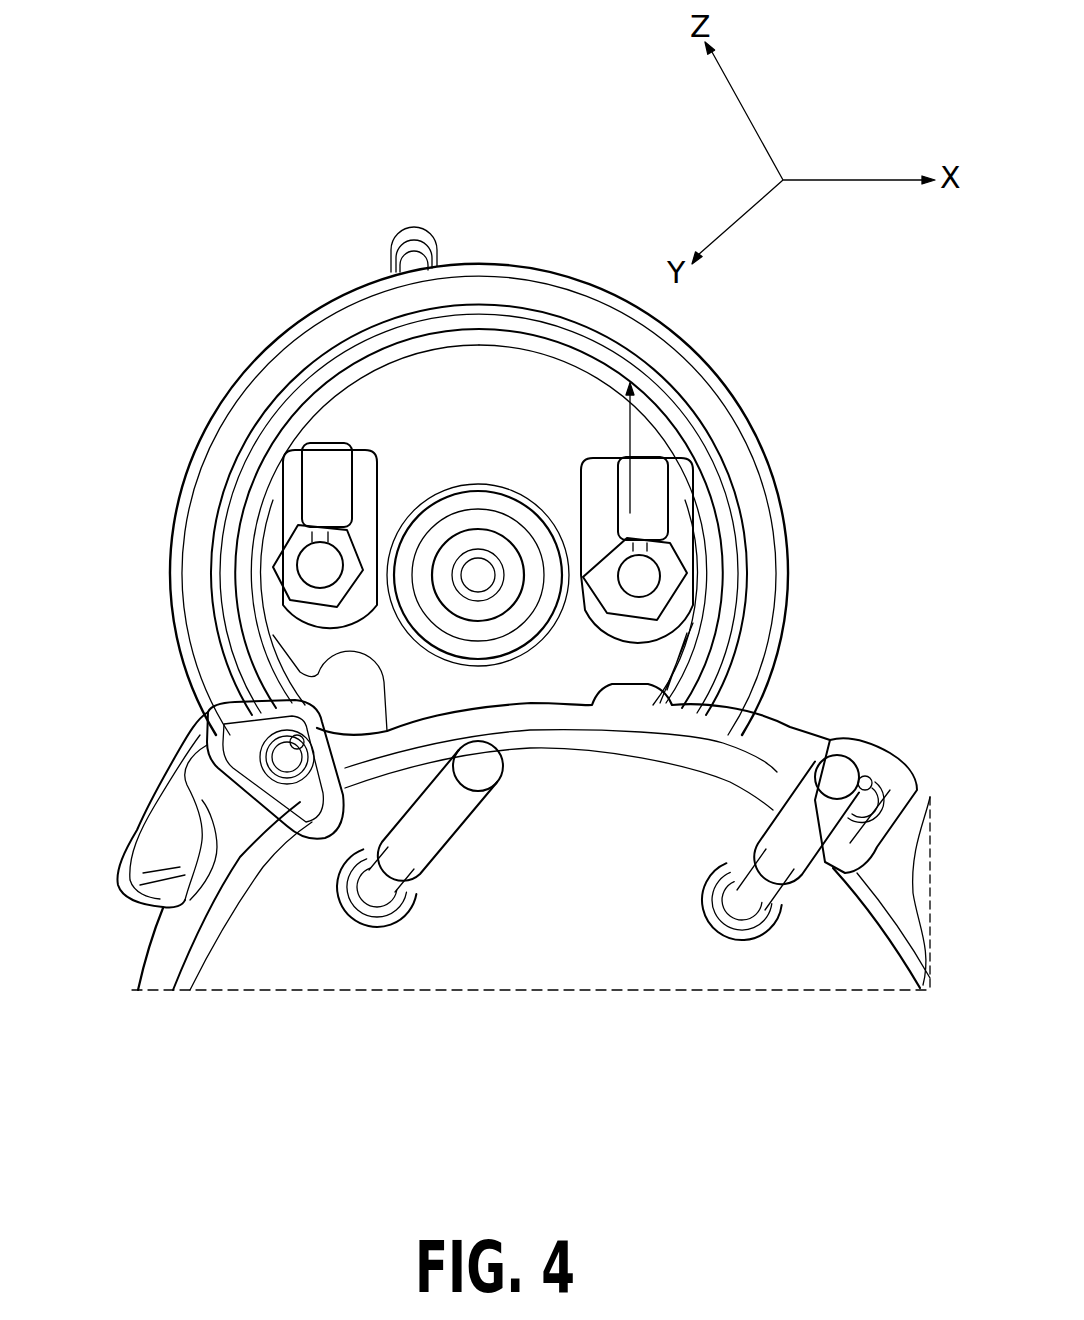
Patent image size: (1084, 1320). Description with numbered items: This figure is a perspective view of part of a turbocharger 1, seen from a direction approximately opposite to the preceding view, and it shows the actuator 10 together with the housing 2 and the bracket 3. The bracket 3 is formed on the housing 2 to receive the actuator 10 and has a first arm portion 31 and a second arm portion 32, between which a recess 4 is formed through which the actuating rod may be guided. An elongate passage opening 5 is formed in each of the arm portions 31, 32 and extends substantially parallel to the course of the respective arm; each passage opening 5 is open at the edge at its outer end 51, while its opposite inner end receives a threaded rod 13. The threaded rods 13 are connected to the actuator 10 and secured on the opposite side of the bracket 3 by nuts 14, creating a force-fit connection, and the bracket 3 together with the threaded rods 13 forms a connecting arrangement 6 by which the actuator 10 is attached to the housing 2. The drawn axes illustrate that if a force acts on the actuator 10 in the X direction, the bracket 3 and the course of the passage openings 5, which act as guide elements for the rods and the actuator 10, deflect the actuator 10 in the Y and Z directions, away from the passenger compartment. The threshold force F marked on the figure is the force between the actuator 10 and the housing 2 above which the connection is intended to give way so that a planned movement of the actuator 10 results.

The turbocharger 1 is at (330, 213).
The housing 2 is at (235, 952).
The bracket 3 is at (705, 650).
The recess 4 is at (473, 452).
The passage opening 5 is at (312, 473).
The connecting arrangement 6 is at (197, 583).
The actuator 10 is at (382, 404).
The threaded rod 13 is at (276, 568).
The nut 14 is at (582, 577).
The first arm portion 31 is at (715, 552).
The second arm portion 32 is at (250, 533).
The outer end 51 is at (323, 430).